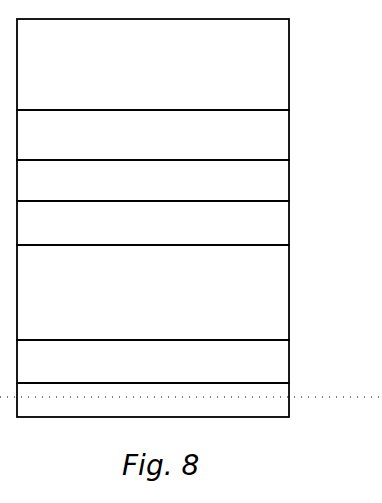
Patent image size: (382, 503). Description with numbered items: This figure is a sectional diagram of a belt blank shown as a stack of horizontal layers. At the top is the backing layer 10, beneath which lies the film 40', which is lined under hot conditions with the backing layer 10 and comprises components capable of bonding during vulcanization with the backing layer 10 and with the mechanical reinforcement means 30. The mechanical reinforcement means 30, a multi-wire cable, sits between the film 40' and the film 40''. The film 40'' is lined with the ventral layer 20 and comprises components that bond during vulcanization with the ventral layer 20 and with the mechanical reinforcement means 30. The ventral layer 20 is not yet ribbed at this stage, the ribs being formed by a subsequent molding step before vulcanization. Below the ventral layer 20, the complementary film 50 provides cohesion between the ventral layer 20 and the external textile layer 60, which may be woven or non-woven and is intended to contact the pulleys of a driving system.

The backing layer 10 is at (257, 64).
The film 40' is at (182, 135).
The mechanical reinforcement means 30 is at (257, 181).
The film 40'' is at (184, 223).
The ventral layer 20 is at (257, 293).
The complementary film 50 is at (257, 362).
The external textile layer 60 is at (257, 401).